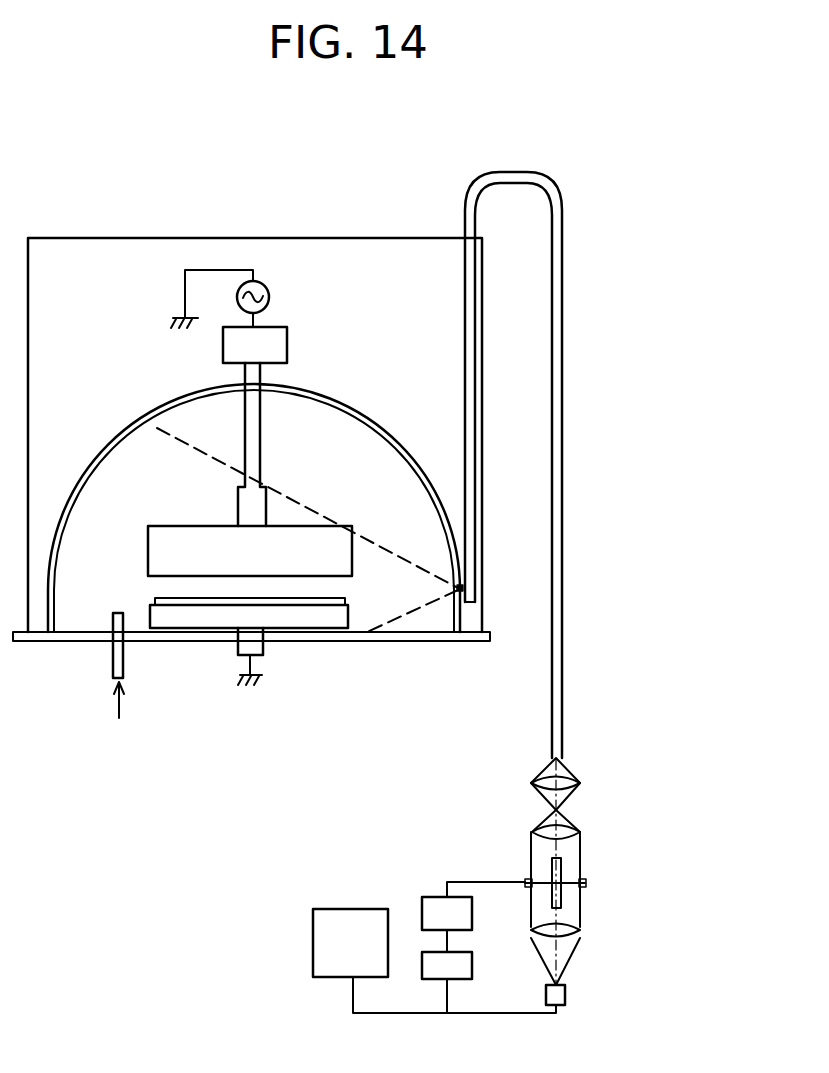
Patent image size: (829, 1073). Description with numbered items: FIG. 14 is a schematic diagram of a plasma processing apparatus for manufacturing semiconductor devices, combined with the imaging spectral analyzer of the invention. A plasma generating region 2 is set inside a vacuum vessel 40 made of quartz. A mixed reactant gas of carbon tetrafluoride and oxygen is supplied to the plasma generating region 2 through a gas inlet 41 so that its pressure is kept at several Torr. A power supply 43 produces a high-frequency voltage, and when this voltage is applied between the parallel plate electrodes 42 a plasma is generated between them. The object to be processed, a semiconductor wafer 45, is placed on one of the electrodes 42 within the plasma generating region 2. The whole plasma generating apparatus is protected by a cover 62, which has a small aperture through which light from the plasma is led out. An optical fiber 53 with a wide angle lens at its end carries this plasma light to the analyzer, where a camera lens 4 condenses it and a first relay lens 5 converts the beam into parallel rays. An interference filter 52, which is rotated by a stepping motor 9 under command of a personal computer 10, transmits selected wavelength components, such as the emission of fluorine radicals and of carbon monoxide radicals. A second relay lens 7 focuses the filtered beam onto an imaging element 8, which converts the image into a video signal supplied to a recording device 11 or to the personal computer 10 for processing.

The cover 62 is at (370, 238).
The vacuum vessel 40 is at (116, 440).
The power supply 43 is at (270, 295).
The parallel plate electrodes 42 is at (185, 525).
The semiconductor wafer 45 is at (341, 597).
The plasma generating region 2 is at (168, 585).
The gas inlet 41 is at (113, 660).
The optical fiber 53 is at (465, 378).
The camera lens 4 is at (582, 774).
The first relay lens 5 is at (582, 827).
The interference filter 52 is at (588, 884).
The second relay lens 7 is at (584, 930).
The imaging element 8 is at (566, 998).
The stepping motor 9 is at (472, 912).
The personal computer 10 is at (472, 968).
The recording device 11 is at (313, 948).